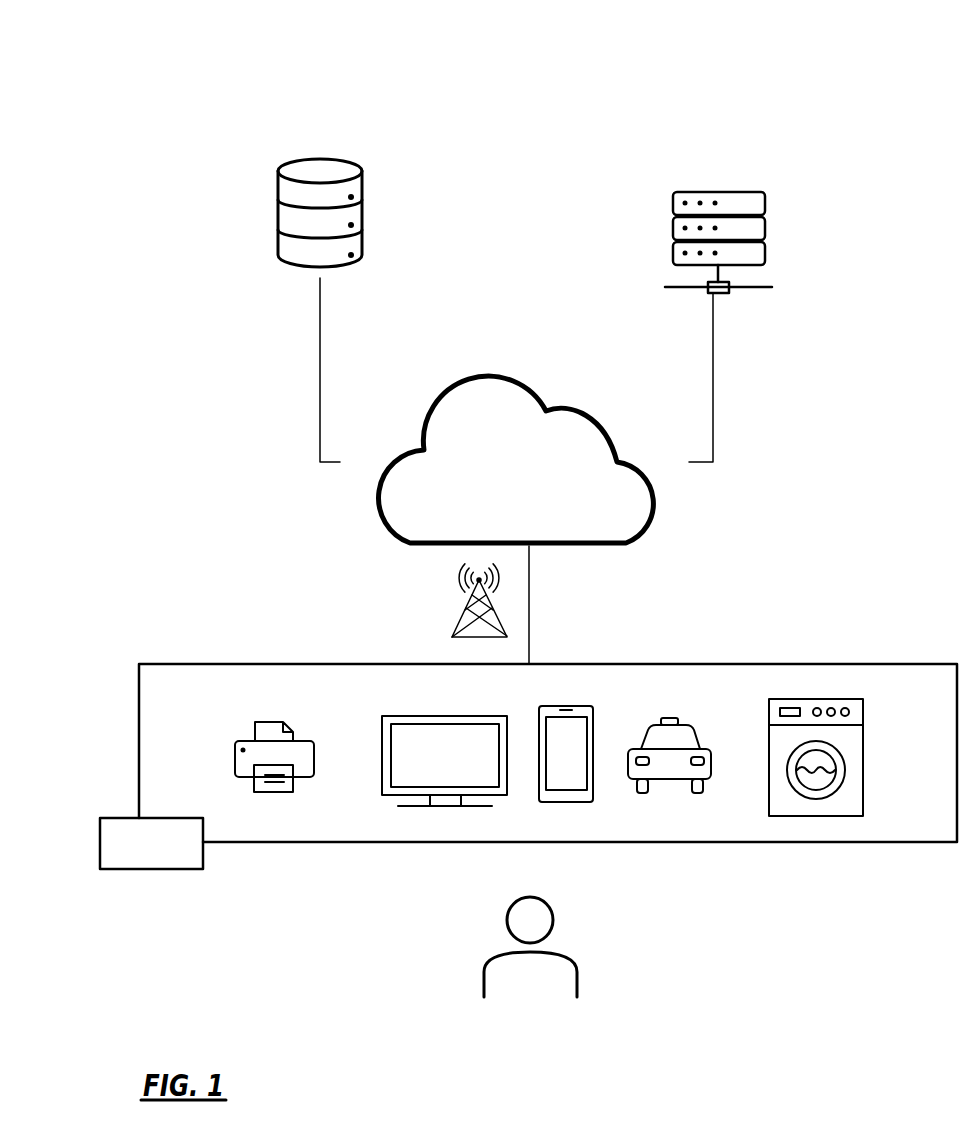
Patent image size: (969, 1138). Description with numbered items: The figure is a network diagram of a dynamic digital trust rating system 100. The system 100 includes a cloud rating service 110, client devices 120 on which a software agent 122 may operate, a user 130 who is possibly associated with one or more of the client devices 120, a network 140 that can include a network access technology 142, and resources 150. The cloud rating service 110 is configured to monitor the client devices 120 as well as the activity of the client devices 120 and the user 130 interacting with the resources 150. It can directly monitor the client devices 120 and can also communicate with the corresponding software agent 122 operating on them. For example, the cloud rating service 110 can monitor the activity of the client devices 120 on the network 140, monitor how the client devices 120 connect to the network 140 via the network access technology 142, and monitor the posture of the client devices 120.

The dynamic digital trust rating system 100 is at (841, 58).
The cloud rating service 110 is at (766, 228).
The client devices 120 is at (786, 664).
The software agent 122 is at (98, 849).
The user 130 is at (577, 968).
The network 140 is at (587, 410).
The network access technology 142 is at (457, 582).
The resources 150 is at (340, 158).